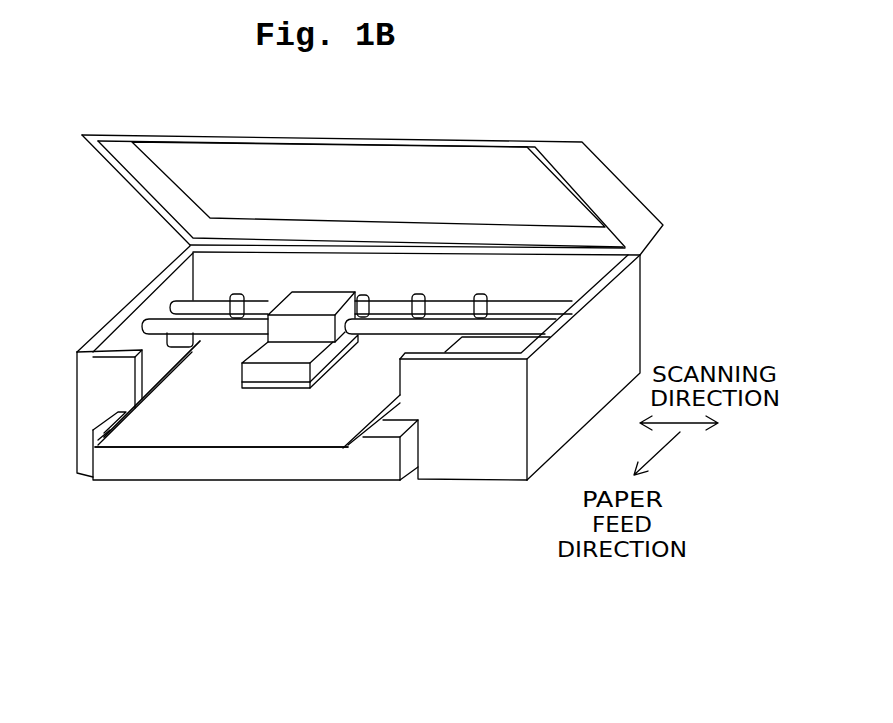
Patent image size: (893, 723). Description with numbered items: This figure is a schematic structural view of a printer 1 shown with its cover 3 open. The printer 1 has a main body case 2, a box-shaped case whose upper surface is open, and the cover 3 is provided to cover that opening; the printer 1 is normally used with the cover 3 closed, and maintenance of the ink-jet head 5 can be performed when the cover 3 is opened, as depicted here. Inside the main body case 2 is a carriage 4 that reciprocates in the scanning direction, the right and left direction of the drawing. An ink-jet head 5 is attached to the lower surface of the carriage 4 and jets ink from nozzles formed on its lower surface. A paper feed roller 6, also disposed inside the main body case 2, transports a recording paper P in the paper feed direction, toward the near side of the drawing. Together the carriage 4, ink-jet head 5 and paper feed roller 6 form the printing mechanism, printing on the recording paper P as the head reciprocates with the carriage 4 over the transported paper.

The printer 1 is at (644, 141).
The main body case 2 is at (628, 343).
The cover 3 is at (643, 219).
The carriage 4 is at (327, 297).
The ink-jet head 5 is at (287, 387).
The paper feed roller 6 is at (445, 312).
The recording paper P is at (173, 432).